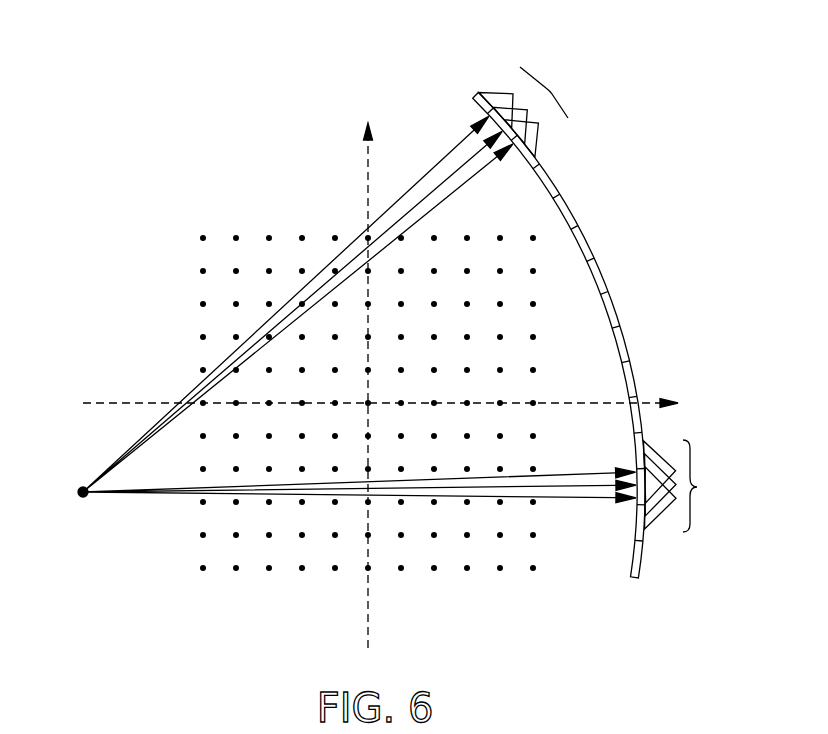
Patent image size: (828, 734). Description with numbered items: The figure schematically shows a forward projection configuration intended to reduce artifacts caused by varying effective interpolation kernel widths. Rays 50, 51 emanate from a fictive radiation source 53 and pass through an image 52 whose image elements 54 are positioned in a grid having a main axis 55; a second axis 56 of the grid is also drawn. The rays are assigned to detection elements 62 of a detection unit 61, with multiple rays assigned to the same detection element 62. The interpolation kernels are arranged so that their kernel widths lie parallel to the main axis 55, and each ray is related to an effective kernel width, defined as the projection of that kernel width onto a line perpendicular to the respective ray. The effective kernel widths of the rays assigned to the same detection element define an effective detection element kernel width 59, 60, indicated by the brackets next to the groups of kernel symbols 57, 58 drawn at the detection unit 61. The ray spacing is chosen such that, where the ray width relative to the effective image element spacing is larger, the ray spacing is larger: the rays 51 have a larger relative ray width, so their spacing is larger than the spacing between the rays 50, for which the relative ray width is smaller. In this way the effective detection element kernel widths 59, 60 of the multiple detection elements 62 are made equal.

The rays 50 is at (574, 504).
The rays 51 is at (432, 160).
The image 52 is at (262, 220).
The fictive radiation source 53 is at (83, 499).
The image elements 54 is at (200, 572).
The main axis 55 is at (371, 623).
The horizontal axis 56 is at (657, 401).
The first set of target elements 57 is at (480, 86).
The second set of target elements 58 is at (662, 536).
The effective detection element kernel width 59 is at (549, 91).
The effective detection element kernel width 60 is at (704, 486).
The detection unit 61 is at (604, 336).
The detection elements 62 is at (656, 246).